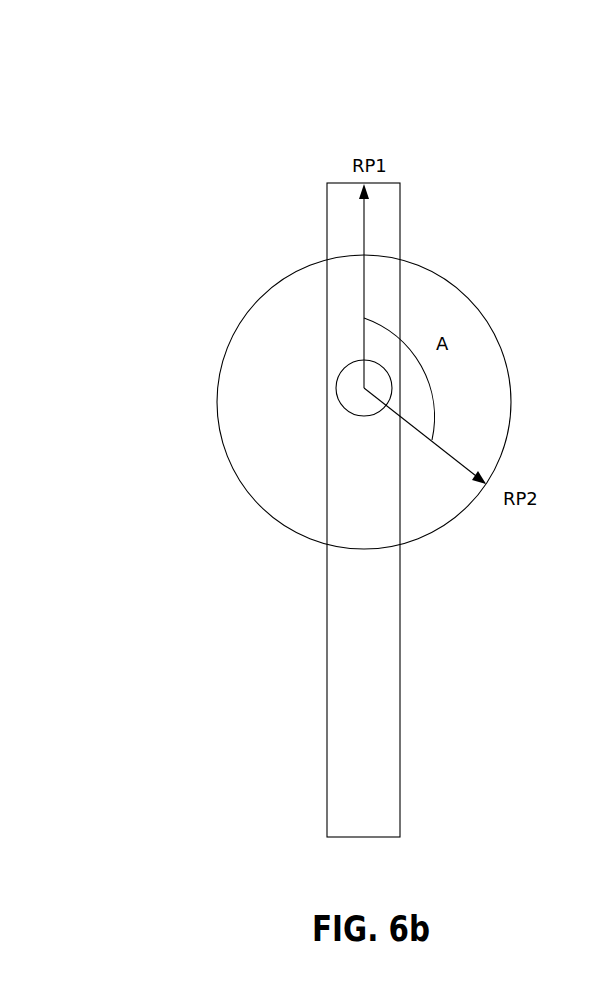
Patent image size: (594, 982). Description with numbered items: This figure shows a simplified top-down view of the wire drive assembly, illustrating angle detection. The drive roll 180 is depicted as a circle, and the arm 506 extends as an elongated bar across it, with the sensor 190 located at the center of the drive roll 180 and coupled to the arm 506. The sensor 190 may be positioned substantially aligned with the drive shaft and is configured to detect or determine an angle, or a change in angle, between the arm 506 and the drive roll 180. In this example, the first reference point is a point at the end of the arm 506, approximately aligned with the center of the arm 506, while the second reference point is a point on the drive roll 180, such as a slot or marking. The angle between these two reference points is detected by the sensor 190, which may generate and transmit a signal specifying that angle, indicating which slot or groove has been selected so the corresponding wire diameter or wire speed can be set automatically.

The drive roll 180 is at (214, 337).
The sensor 190 is at (337, 388).
The arm 506 is at (299, 757).